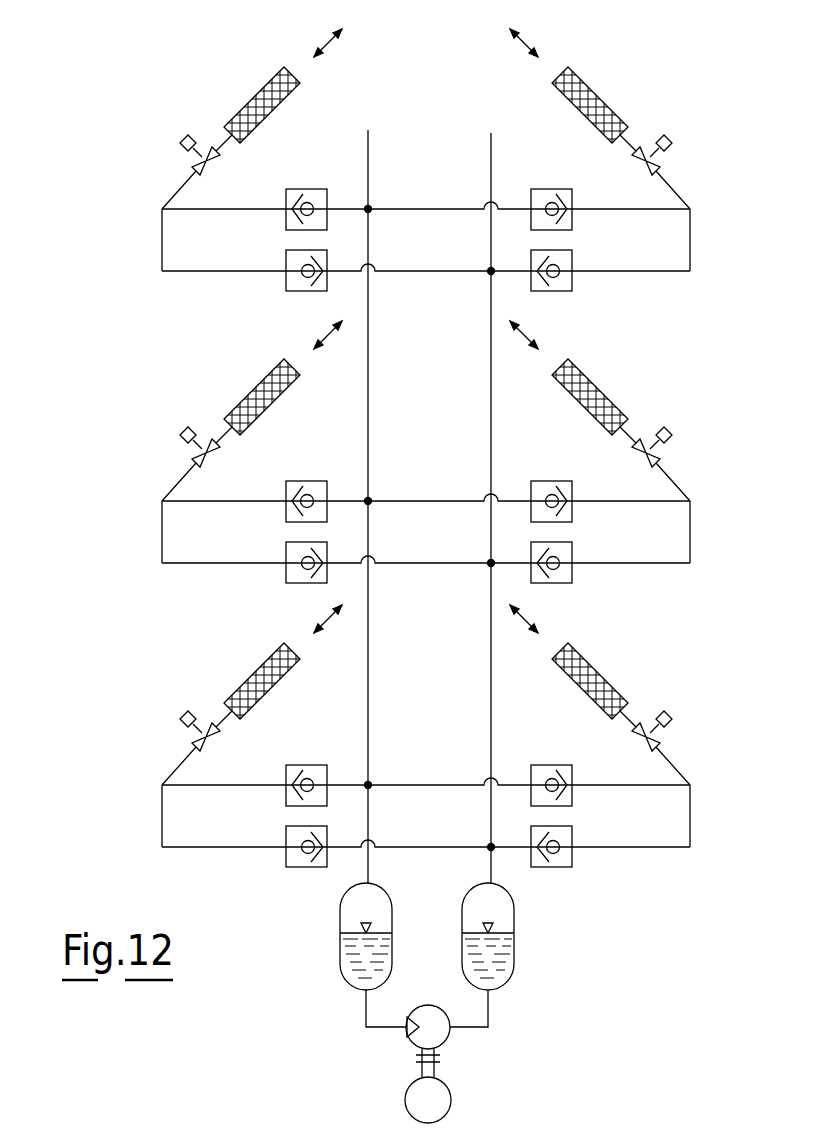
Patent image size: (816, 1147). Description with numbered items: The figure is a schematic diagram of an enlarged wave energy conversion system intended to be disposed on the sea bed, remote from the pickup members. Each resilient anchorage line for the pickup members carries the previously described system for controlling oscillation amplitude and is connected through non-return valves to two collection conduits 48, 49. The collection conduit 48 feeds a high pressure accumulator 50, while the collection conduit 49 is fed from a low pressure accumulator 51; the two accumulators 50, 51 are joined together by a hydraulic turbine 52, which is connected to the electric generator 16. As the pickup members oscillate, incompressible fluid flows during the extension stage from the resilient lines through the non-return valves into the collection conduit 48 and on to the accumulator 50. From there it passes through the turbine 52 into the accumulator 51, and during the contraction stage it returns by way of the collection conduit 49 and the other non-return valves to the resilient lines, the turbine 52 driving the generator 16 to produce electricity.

The electric generator 16 is at (406, 1097).
The collection conduit 48 is at (356, 880).
The collection conduit 49 is at (498, 882).
The high pressure accumulator 50 is at (340, 968).
The low pressure accumulator 51 is at (514, 962).
The hydraulic turbine 52 is at (446, 1044).